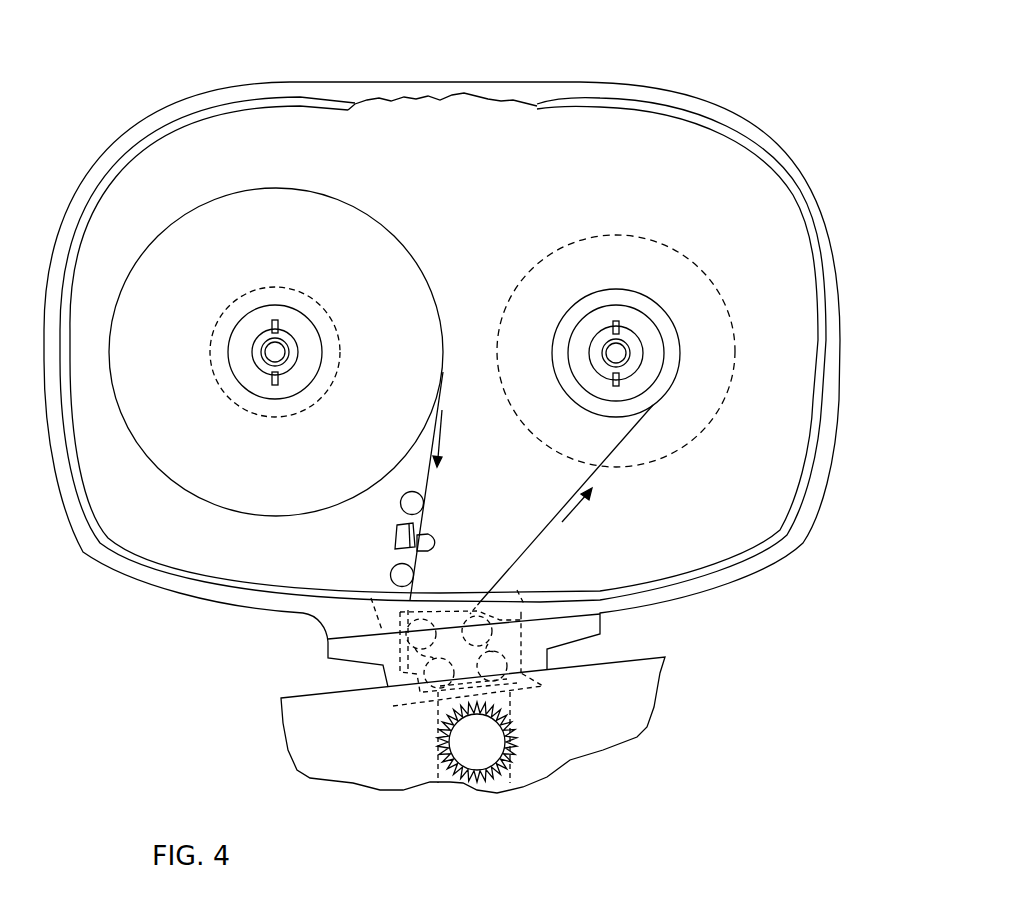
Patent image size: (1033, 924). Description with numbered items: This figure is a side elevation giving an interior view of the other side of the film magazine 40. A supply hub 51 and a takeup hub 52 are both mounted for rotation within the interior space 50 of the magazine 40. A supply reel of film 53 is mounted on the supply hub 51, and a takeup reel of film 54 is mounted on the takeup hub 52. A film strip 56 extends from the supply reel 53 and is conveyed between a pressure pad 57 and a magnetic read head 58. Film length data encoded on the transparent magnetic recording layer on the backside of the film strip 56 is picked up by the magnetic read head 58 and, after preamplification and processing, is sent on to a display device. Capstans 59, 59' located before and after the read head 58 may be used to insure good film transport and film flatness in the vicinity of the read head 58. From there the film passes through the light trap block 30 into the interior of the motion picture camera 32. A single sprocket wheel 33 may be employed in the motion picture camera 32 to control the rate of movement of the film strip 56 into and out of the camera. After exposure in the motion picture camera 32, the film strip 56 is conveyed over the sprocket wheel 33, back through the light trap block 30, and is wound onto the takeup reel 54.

The light trap block 30 is at (330, 660).
The motion picture camera 32 is at (645, 690).
The sprocket wheel 33 is at (465, 742).
The film magazine 40 is at (791, 157).
The interior space 50 is at (637, 122).
The supply hub 51 is at (257, 347).
The takeup hub 52 is at (627, 339).
The supply reel of film 53 is at (313, 220).
The takeup reel of film 54 is at (672, 360).
The film strip 56 is at (428, 480).
The pressure pad 57 is at (395, 538).
The magnetic read head 58 is at (434, 539).
The capstan 59 is at (388, 510).
The capstan 59' is at (376, 579).